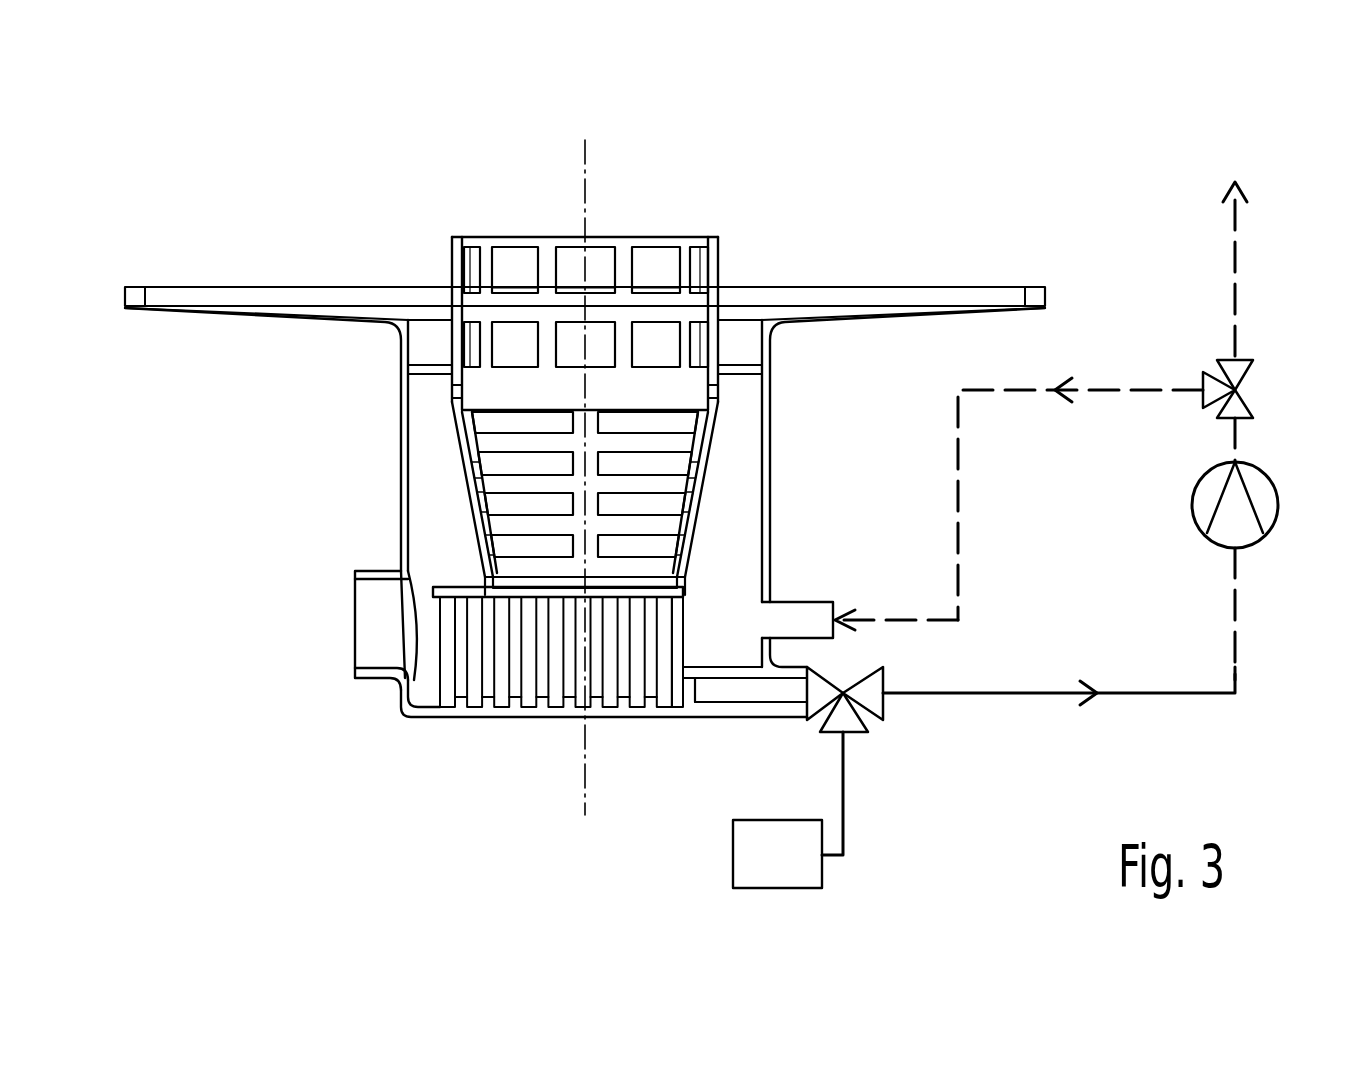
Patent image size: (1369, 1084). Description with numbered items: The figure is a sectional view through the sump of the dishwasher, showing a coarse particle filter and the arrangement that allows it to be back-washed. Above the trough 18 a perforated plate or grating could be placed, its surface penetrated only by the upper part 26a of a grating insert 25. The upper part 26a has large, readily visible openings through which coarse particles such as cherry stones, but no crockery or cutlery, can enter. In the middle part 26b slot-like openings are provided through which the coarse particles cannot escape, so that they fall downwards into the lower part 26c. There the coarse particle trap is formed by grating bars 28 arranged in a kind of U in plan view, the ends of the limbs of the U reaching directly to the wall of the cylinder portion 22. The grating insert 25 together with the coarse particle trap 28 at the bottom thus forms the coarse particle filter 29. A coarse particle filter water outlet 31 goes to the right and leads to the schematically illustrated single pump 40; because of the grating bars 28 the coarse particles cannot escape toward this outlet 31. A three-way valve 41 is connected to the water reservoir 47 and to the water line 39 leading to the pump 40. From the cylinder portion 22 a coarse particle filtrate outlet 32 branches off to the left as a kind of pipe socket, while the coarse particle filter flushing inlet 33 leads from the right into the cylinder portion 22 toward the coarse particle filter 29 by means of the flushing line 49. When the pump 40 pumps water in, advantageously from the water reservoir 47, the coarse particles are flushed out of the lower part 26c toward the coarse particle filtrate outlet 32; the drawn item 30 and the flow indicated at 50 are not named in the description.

The trough 18 is at (287, 322).
The cylinder portion 22 is at (400, 443).
The grating insert 25 is at (427, 495).
The upper part 26a is at (732, 224).
The middle part 26b is at (470, 508).
The lower part 26c is at (422, 684).
The grating bars 28 is at (505, 687).
The coarse particle filter 29 is at (450, 545).
The cooling arrangement 30 is at (648, 205).
The coarse particle filter water outlet 31 is at (783, 687).
The coarse particle filtrate outlet 32 is at (355, 621).
The coarse particle filter flushing inlet 33 is at (803, 600).
The water line 39 is at (977, 697).
The pump 40 is at (1200, 528).
The three-way valve 41 is at (885, 668).
The water reservoir 47 is at (762, 871).
The flushing line 49 is at (960, 495).
The return flow 50 is at (868, 600).